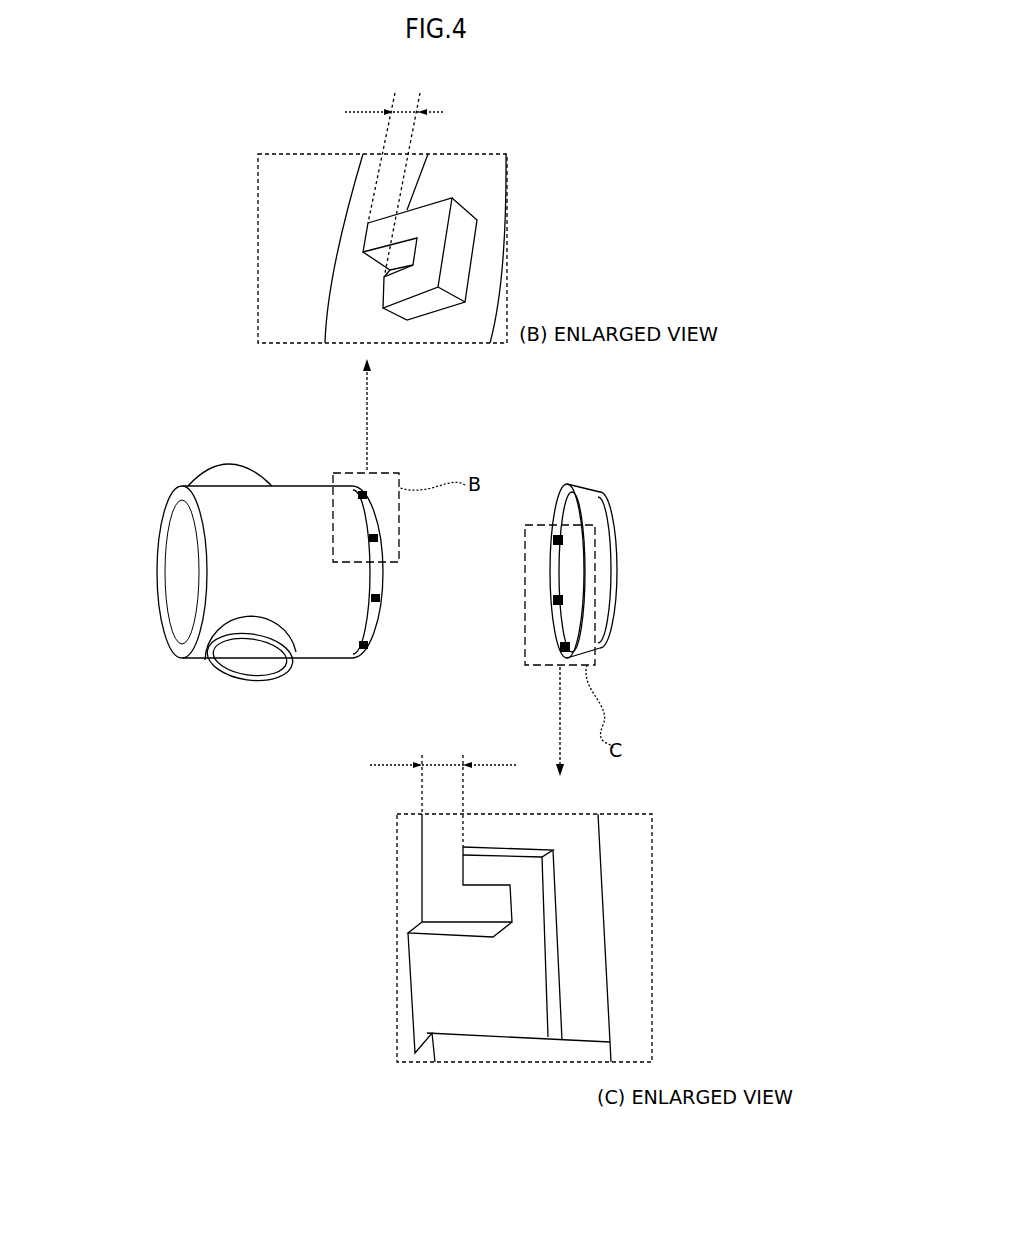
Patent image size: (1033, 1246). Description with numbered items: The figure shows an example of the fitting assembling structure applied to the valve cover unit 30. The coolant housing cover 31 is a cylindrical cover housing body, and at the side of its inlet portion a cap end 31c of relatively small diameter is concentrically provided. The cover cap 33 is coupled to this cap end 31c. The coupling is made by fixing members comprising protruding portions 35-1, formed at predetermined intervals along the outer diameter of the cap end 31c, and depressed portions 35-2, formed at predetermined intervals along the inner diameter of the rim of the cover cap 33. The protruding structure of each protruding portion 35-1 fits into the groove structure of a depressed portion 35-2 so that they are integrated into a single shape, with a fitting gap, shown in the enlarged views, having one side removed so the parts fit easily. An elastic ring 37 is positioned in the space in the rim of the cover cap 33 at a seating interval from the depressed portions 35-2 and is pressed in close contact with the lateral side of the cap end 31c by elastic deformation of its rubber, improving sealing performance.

The valve cover unit 30 is at (724, 384).
The coolant housing cover 31 is at (182, 575).
The cap end 31c is at (382, 612).
The cover cap 33 is at (600, 494).
The protruding portion 35-1 is at (462, 234).
The depressed portion 35-2 is at (432, 997).
The elastic ring 37 is at (580, 560).